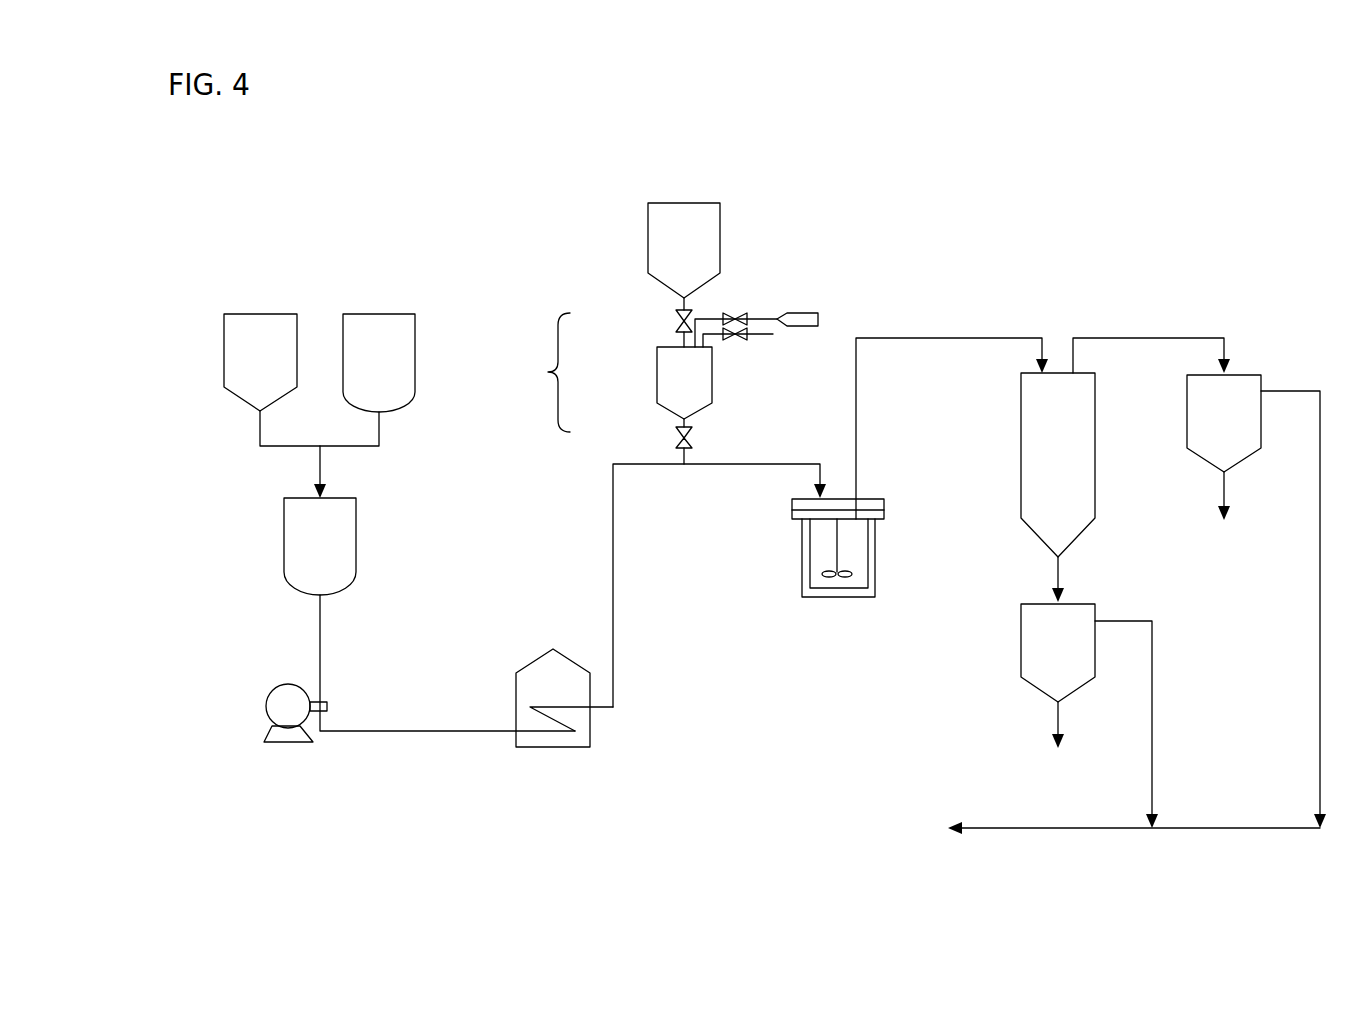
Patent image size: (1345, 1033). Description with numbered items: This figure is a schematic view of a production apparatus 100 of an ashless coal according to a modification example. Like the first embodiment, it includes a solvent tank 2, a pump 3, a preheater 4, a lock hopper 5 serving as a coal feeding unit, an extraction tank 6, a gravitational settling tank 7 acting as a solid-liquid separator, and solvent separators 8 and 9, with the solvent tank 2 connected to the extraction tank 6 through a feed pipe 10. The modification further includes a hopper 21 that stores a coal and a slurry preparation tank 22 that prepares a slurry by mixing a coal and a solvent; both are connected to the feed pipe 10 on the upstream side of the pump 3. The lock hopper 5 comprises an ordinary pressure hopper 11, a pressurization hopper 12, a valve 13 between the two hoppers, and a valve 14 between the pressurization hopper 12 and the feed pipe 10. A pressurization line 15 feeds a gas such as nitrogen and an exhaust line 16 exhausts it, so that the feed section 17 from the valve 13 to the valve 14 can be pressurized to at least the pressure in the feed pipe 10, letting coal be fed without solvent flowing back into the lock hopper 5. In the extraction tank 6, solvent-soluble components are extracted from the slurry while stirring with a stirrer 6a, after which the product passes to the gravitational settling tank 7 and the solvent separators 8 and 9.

The production apparatus 100 is at (300, 188).
The solvent tank 2 is at (398, 347).
The hopper 21 is at (238, 347).
The slurry preparation tank 22 is at (292, 526).
The pump 3 is at (282, 702).
The preheater 4 is at (572, 738).
The feed pipe 10 is at (613, 562).
The lock hopper 5 is at (535, 209).
The ordinary pressure hopper 11 is at (675, 260).
The pressurization hopper 12 is at (673, 387).
The valve 13 is at (675, 318).
The valve 14 is at (677, 430).
The pressurization line 15 is at (758, 318).
The exhaust line 16 is at (762, 335).
The feed section 17 is at (538, 372).
The extraction tank 6 is at (808, 553).
The stirrer 6a is at (842, 572).
The gravitational settling tank 7 is at (1038, 412).
The solvent separator 8 is at (1205, 423).
The solvent separator 9 is at (1040, 638).